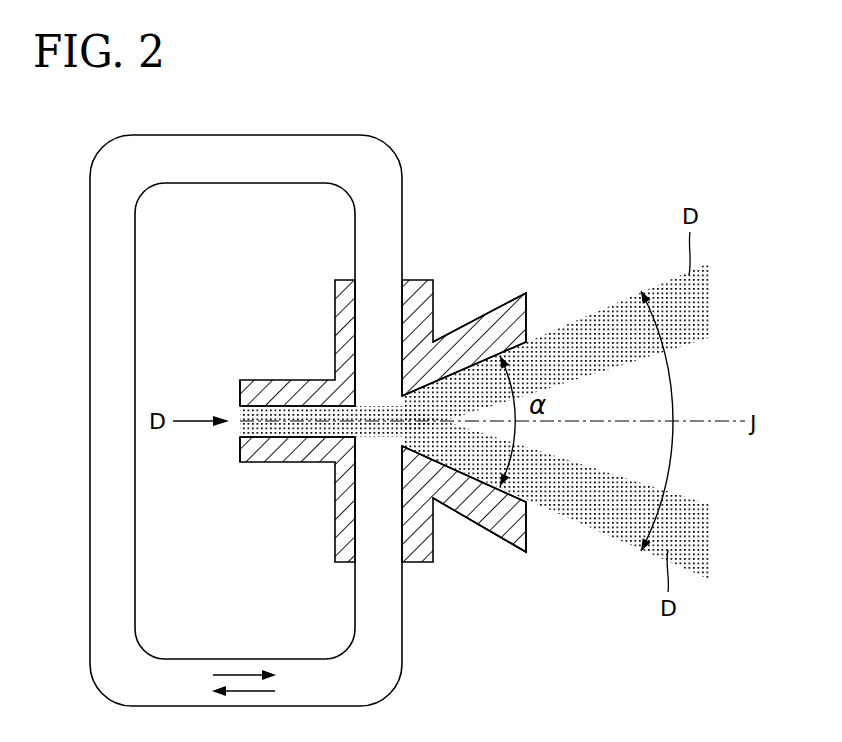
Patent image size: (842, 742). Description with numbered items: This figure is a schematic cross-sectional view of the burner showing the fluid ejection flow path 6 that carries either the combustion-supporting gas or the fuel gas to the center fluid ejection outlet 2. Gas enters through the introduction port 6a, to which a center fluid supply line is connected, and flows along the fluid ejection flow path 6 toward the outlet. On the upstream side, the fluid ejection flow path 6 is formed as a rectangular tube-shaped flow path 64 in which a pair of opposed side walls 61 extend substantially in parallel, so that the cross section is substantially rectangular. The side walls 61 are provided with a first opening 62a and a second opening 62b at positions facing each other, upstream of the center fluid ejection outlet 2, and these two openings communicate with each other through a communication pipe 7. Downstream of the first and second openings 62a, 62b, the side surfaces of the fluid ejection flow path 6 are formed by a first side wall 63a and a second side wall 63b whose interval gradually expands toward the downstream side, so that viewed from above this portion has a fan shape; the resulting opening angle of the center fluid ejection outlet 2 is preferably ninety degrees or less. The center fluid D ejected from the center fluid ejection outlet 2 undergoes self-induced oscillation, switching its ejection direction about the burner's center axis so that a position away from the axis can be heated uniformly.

The center fluid ejection outlet 2 is at (534, 436).
The fluid ejection flow path 6 is at (467, 400).
The introduction port 6a is at (233, 407).
The communication pipe 7 is at (243, 152).
The side walls 61 is at (264, 403).
The first opening 62a is at (373, 397).
The second opening 62b is at (373, 447).
The first side wall 63a is at (452, 372).
The second side wall 63b is at (468, 470).
The rectangular tube-shaped flow path 64 is at (278, 427).